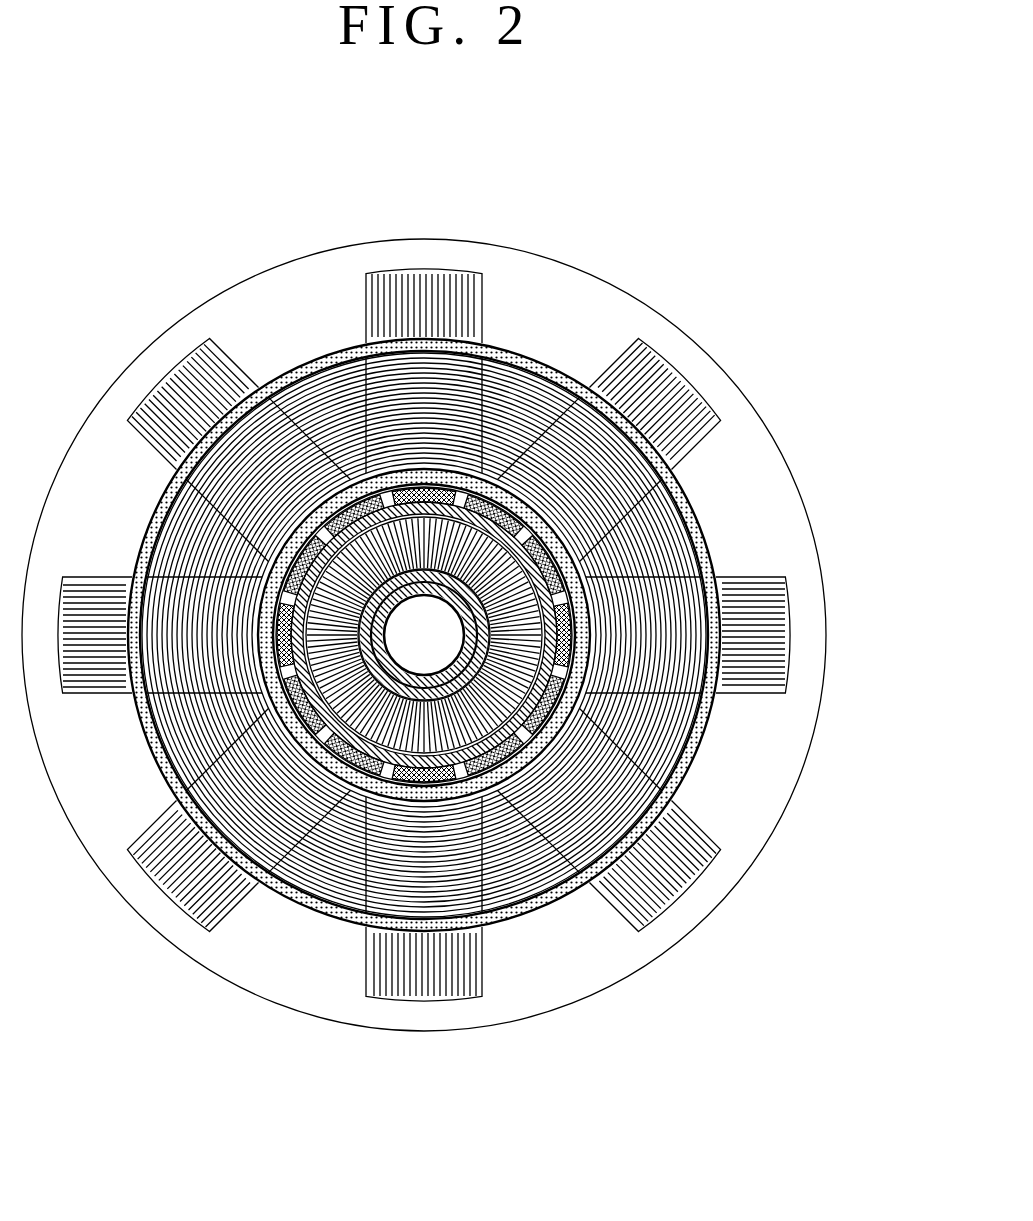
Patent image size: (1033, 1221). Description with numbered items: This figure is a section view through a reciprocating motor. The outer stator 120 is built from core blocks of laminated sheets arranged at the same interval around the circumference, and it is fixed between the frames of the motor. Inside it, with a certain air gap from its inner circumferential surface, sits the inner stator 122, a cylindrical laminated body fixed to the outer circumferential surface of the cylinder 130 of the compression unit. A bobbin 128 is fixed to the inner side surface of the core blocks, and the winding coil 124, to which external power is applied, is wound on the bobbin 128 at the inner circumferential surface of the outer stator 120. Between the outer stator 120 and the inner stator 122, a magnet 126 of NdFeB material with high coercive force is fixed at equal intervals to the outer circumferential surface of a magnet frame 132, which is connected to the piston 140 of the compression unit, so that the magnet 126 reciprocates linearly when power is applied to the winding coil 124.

The outer stator 120 is at (485, 635).
The inner stator 122 is at (508, 727).
The winding coil 124 is at (690, 718).
The magnet 126 is at (697, 765).
The bobbin 128 is at (527, 503).
The cylinder 130 is at (377, 750).
The magnet frame 132 is at (668, 872).
The piston 140 is at (418, 682).